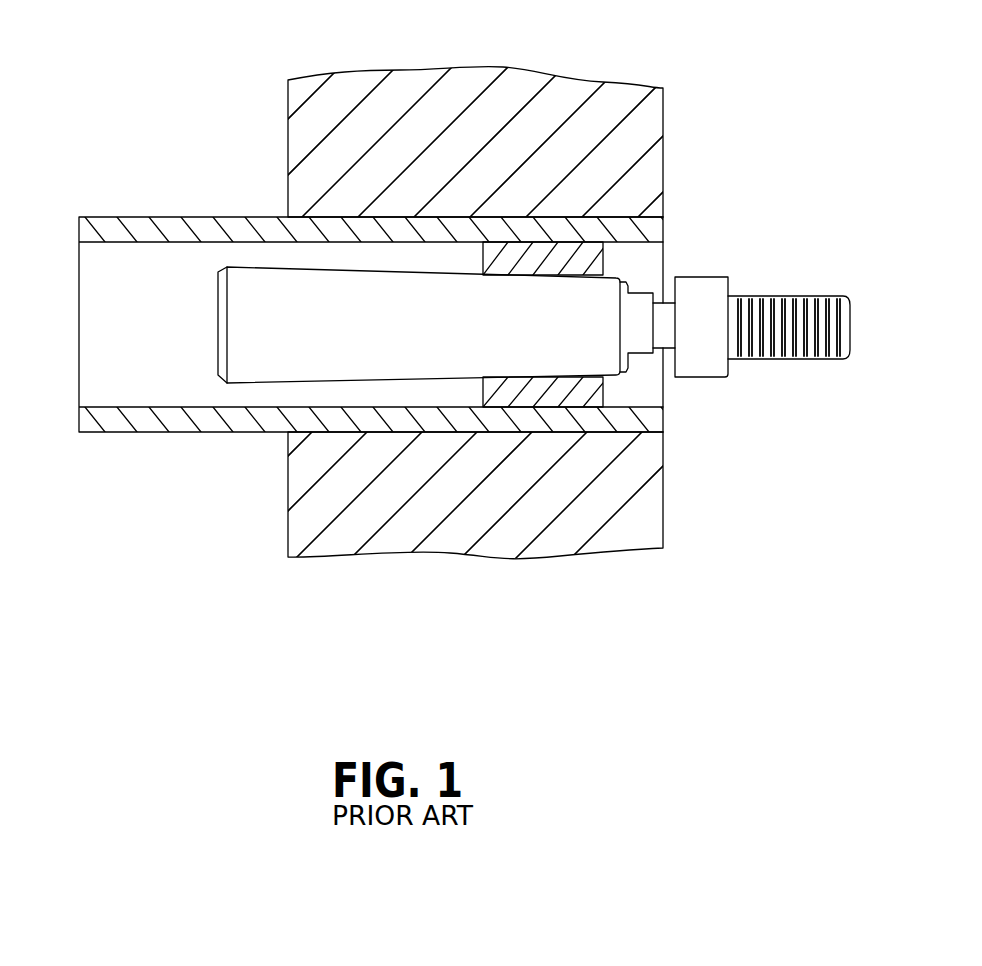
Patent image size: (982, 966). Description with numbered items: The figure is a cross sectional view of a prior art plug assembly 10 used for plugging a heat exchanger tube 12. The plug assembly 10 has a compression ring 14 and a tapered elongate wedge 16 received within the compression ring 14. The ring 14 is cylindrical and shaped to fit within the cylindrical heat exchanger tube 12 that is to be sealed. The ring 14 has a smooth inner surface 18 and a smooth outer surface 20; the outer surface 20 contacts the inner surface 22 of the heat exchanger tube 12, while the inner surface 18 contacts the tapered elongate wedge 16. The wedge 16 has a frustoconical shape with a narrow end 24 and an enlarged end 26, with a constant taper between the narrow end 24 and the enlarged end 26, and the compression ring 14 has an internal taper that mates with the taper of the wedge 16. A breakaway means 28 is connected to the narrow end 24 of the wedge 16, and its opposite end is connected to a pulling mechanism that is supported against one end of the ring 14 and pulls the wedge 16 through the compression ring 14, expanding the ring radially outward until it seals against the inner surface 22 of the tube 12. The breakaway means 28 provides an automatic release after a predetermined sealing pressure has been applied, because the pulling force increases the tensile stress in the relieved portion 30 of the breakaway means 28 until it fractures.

The plug assembly 10 is at (740, 190).
The heat exchanger tube 12 is at (379, 324).
The compression ring 14 is at (605, 394).
The tapered elongate wedge 16 is at (293, 367).
The inner surface 18 is at (523, 277).
The outer surface 20 is at (560, 410).
The inner surface 22 is at (95, 407).
The narrow end 24 is at (627, 365).
The enlarged end 26 is at (217, 276).
The breakaway means 28 is at (728, 281).
The relieved portion 30 is at (665, 302).